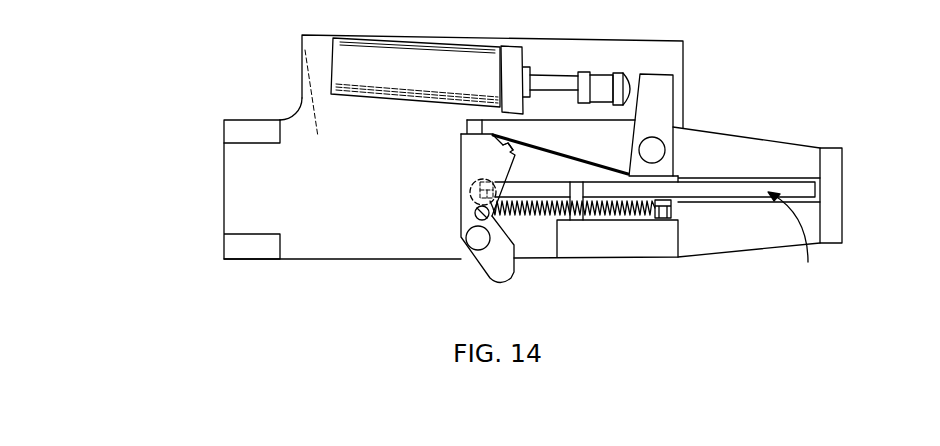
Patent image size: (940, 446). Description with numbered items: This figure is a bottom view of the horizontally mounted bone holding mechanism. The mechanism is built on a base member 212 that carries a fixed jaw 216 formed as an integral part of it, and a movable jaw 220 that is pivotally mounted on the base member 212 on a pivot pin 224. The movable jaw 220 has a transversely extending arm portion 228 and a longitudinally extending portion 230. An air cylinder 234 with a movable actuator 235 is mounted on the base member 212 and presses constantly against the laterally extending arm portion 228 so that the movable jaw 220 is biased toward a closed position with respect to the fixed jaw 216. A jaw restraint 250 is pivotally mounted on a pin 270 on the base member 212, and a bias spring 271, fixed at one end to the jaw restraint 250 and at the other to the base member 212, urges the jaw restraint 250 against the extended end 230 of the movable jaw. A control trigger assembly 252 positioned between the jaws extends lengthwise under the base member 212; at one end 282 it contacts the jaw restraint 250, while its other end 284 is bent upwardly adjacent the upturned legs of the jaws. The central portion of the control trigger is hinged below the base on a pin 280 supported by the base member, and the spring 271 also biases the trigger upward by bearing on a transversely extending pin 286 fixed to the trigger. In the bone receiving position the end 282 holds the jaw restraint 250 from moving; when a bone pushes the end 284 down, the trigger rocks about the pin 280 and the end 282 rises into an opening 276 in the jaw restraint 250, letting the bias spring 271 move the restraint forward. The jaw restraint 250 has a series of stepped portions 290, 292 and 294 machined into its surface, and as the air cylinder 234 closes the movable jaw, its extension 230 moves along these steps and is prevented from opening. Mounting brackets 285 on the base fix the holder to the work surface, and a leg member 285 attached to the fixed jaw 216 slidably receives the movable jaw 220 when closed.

The base member 212 is at (650, 53).
The fixed jaw 216 is at (778, 237).
The movable jaw 220 is at (772, 147).
The pivot pin 224 is at (655, 150).
The transversely extending arm portion 228 is at (662, 88).
The longitudinally extending portion 230 is at (602, 146).
The air cylinder 234 is at (420, 55).
The movable actuator 235 is at (581, 80).
The jaw restraint 250 is at (497, 270).
The control trigger assembly 252 is at (800, 238).
The pin 270 is at (475, 235).
The bias spring 271 is at (643, 215).
The opening 276 is at (470, 182).
The pin 280 is at (575, 220).
The end of control trigger 282 is at (471, 199).
The other end of control trigger assembly 284 is at (813, 190).
The mounting brackets 285 is at (243, 130).
The transversely extending pin 286 is at (615, 210).
The stepped portion 290 is at (470, 131).
The stepped portion 292 is at (493, 136).
The stepped portion 294 is at (518, 150).